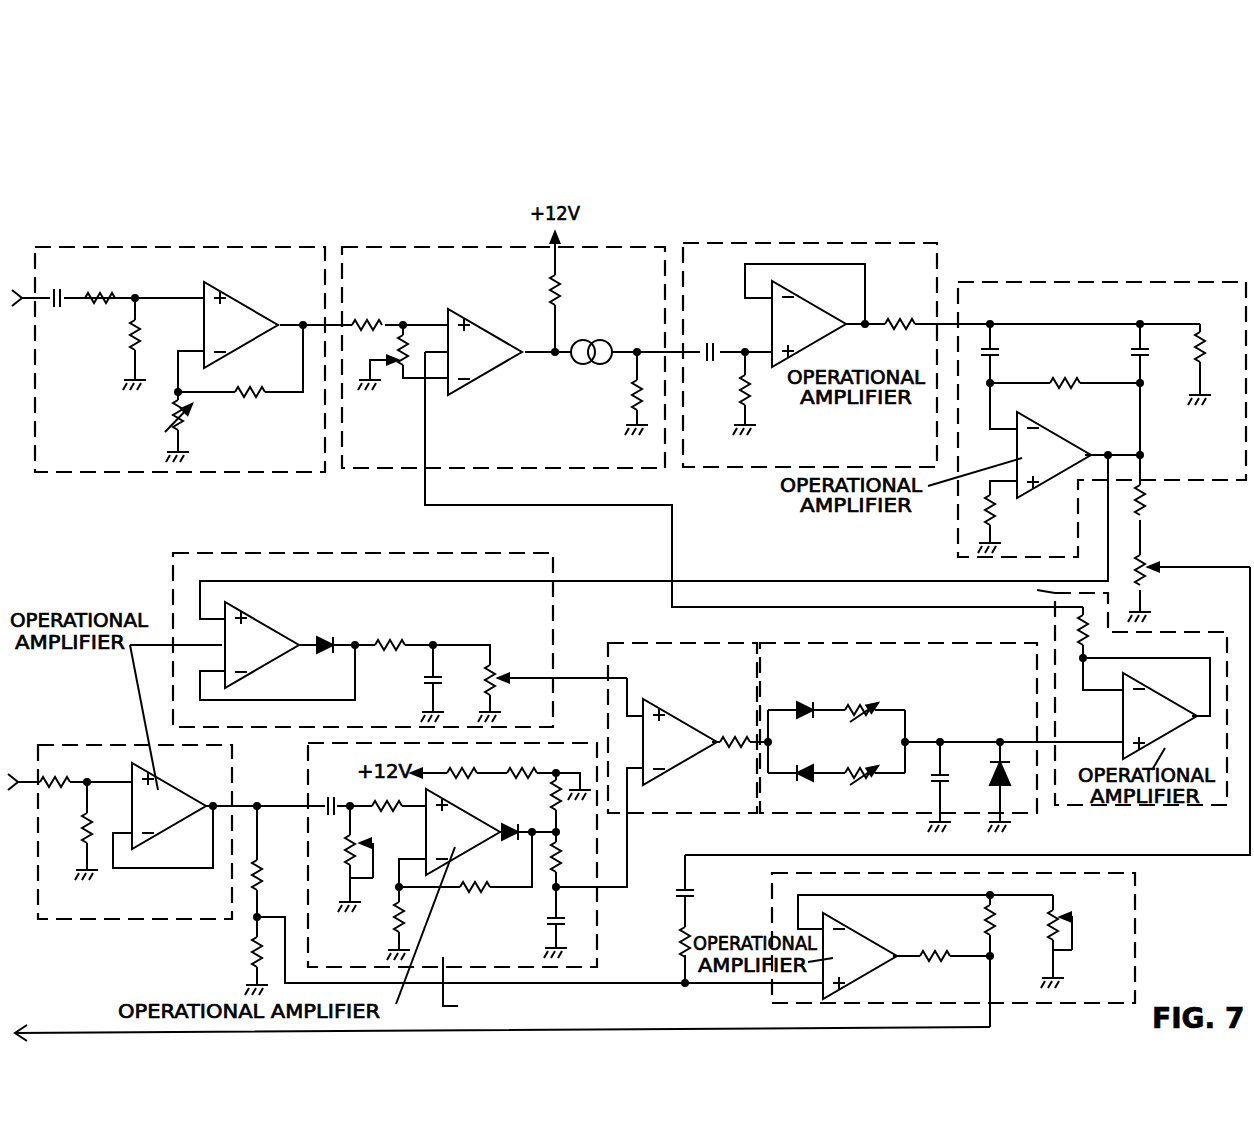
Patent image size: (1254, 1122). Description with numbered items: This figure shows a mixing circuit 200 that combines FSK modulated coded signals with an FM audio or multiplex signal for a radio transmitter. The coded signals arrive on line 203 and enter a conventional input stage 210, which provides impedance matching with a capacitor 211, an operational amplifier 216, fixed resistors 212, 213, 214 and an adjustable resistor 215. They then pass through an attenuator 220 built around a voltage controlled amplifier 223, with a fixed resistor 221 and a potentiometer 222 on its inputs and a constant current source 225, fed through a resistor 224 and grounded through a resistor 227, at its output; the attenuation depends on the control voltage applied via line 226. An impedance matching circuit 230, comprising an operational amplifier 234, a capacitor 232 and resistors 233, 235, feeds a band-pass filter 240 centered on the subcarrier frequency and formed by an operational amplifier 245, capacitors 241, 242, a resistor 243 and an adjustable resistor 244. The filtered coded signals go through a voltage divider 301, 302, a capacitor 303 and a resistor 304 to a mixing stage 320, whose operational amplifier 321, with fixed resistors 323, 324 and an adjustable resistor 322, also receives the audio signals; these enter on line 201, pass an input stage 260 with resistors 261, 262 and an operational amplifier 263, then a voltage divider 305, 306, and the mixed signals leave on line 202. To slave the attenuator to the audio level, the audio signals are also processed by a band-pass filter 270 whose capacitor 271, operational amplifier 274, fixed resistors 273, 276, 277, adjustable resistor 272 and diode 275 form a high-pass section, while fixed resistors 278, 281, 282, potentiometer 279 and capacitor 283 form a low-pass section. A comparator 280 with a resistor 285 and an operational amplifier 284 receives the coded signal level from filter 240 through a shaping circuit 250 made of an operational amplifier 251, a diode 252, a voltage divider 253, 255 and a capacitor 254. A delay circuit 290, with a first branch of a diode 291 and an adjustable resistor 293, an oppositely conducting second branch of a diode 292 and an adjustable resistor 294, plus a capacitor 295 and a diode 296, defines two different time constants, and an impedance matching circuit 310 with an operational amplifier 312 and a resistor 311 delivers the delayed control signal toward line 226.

The mixing circuit 200 is at (106, 534).
The line 201 is at (28, 778).
The line 202 is at (48, 1031).
The line 203 is at (22, 298).
The input stage 210 is at (173, 247).
The capacitor 211 is at (58, 292).
The fixed resistor 212 is at (100, 292).
The fixed resistor 213 is at (130, 336).
The fixed resistor 214 is at (252, 398).
The adjustable resistor 215 is at (166, 421).
The operational amplifier 216 is at (236, 306).
The attenuator 220 is at (428, 245).
The fixed resistor 221 is at (369, 318).
The potentiometer 222 is at (398, 384).
The voltage controlled amplifier 223 is at (490, 378).
The resistor 224 is at (550, 290).
The constant current source 225 is at (604, 338).
The line 226 is at (997, 508).
The resistor 227 is at (630, 400).
The impedance matching circuit 230 is at (779, 243).
The capacitor 232 is at (712, 336).
The resistor 233 is at (740, 414).
The operational amplifier 234 is at (825, 332).
The resistor 235 is at (896, 316).
The band-pass filter 240 is at (1059, 282).
The capacitor 241 is at (998, 362).
The capacitor 242 is at (1130, 355).
The resistor 243 is at (1066, 379).
The adjustable resistor 244 is at (1203, 336).
The operational amplifier 245 is at (1050, 431).
The shaping circuit 250 is at (325, 553).
The operational amplifier 251 is at (265, 626).
The diode 252 is at (328, 659).
The voltage divider 253 is at (386, 635).
The capacitor 254 is at (425, 681).
The voltage divider 255 is at (495, 660).
The input stage 260 is at (135, 921).
The resistor 261 is at (57, 780).
The resistor 262 is at (84, 825).
The operational amplifier 263 is at (162, 790).
The band-pass filter 270 is at (303, 753).
The capacitor 271 is at (329, 797).
The adjustable resistor 272 is at (348, 862).
The fixed resistor 273 is at (393, 812).
The operational amplifier 274 is at (461, 812).
The diode 275 is at (513, 838).
The fixed resistor 276 is at (478, 895).
The fixed resistor 277 is at (392, 922).
The fixed resistor 278 is at (463, 768).
The potentiometer 279 is at (518, 771).
The comparator 280 is at (633, 643).
The fixed resistor 281 is at (552, 797).
The fixed resistor 282 is at (553, 885).
The capacitor 283 is at (546, 928).
The operational amplifier 284 is at (668, 719).
The resistor 285 is at (735, 748).
The delay circuit 290 is at (828, 643).
The diode 291 is at (803, 701).
The diode 292 is at (808, 780).
The adjustable resistor 293 is at (866, 702).
The adjustable resistor 294 is at (876, 779).
The capacitor 295 is at (932, 782).
The diode 296 is at (1006, 790).
The voltage divider 301 is at (1149, 511).
The voltage divider 302 is at (1151, 585).
The capacitor 303 is at (697, 898).
The resistor 304 is at (680, 942).
The voltage divider 305 is at (259, 862).
The voltage divider 306 is at (248, 950).
The impedance matching circuit 310 is at (1142, 806).
The resistor 311 is at (1078, 633).
The operational amplifier 312 is at (1158, 702).
The mixing stage 320 is at (1140, 948).
The operational amplifier 321 is at (867, 937).
The adjustable resistor 322 is at (1058, 913).
The fixed resistor 323 is at (994, 934).
The fixed resistor 324 is at (930, 962).